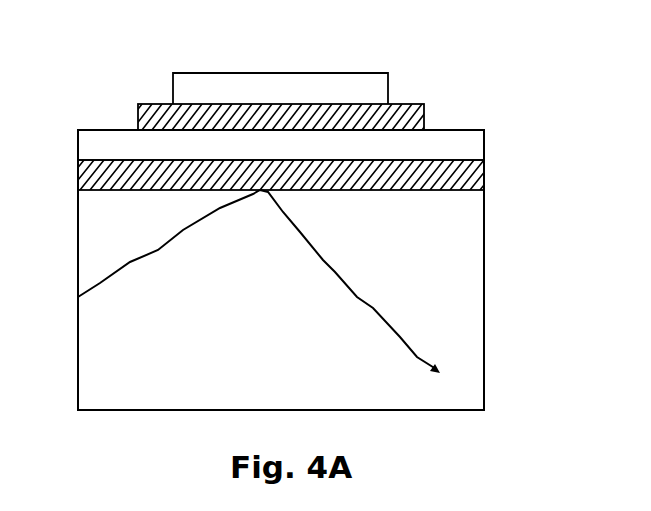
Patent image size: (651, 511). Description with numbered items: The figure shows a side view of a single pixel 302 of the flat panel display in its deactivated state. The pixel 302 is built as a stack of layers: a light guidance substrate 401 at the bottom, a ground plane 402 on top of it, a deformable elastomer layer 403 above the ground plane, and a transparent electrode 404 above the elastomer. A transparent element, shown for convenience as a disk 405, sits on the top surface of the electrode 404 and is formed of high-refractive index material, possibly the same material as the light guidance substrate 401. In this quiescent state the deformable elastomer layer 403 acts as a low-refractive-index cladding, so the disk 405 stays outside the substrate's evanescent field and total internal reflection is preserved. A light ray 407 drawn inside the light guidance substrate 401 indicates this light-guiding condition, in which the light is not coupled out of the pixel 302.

The pixel 302 is at (473, 39).
The light guidance substrate 401 is at (482, 269).
The ground plane 402 is at (486, 178).
The deformable elastomer layer 403 is at (486, 137).
The transparent electrode 404 is at (442, 96).
The disk 405 is at (363, 72).
The light ray 407 is at (129, 273).